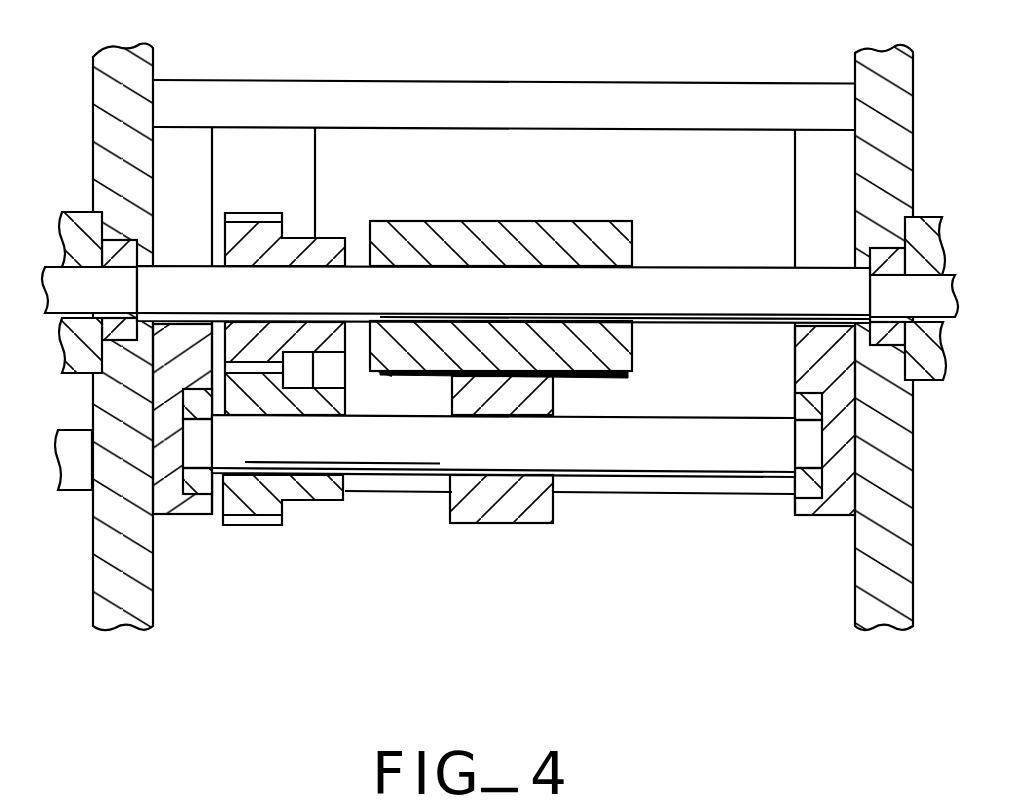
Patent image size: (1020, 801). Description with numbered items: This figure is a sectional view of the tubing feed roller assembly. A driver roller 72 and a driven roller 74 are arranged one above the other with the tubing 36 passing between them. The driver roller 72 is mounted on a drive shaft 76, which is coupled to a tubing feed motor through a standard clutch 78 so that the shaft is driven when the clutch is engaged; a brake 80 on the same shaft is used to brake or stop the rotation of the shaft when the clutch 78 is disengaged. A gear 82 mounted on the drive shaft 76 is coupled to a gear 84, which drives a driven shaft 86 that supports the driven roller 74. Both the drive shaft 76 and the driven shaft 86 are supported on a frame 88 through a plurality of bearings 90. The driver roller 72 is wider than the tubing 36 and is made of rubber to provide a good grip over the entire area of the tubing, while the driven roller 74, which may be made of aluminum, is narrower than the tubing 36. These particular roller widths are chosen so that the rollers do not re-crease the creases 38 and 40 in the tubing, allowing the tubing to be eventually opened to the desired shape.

The tubing 36 is at (592, 378).
The crease 38 is at (382, 376).
The crease 40 is at (620, 375).
The driver roller 72 is at (598, 220).
The driven roller 74 is at (540, 525).
The drive shaft 76 is at (687, 267).
The clutch 78 is at (927, 218).
The brake 80 is at (75, 212).
The gear 82 is at (328, 238).
The gear 84 is at (317, 490).
The driven shaft 86 is at (415, 448).
The frame 88 is at (157, 60).
The bearings 90 is at (125, 252).